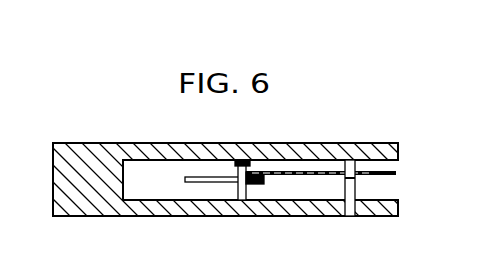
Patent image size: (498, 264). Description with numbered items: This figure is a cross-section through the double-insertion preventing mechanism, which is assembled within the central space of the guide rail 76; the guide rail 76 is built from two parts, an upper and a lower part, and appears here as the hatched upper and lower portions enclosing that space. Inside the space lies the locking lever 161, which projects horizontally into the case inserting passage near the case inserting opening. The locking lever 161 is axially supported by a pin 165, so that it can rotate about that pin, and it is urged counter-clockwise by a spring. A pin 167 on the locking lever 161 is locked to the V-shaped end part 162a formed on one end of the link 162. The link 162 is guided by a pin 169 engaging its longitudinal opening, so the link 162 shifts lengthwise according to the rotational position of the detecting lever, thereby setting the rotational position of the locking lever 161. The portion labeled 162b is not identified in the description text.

The guide rail 76 is at (103, 216).
The locking lever 161 is at (190, 184).
The pin 165 is at (237, 186).
The pin 167 is at (246, 160).
The link 162 is at (296, 176).
The V-shaped end part 162a is at (392, 185).
The lead wire terminal post 162b is at (357, 178).
The pin 169 is at (352, 180).